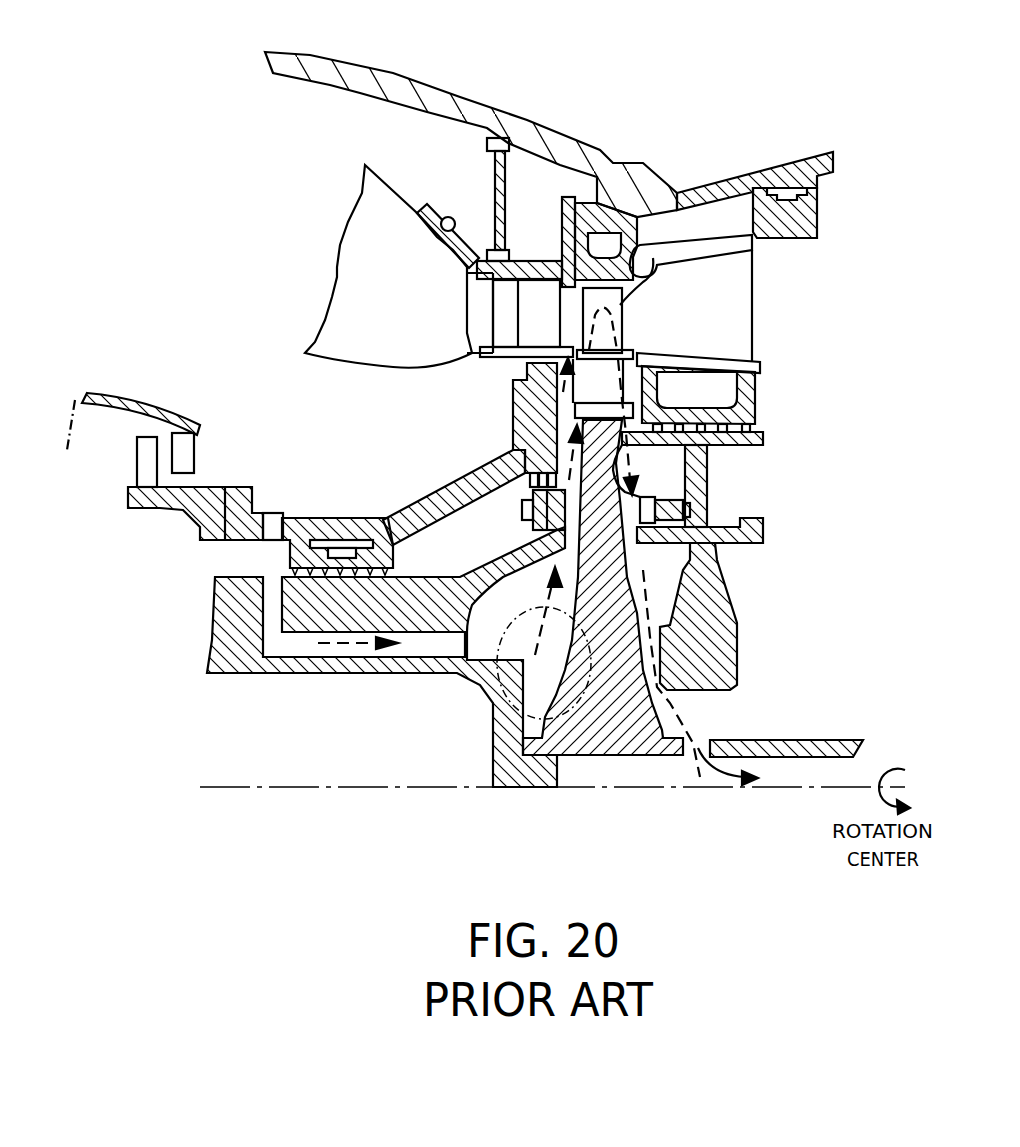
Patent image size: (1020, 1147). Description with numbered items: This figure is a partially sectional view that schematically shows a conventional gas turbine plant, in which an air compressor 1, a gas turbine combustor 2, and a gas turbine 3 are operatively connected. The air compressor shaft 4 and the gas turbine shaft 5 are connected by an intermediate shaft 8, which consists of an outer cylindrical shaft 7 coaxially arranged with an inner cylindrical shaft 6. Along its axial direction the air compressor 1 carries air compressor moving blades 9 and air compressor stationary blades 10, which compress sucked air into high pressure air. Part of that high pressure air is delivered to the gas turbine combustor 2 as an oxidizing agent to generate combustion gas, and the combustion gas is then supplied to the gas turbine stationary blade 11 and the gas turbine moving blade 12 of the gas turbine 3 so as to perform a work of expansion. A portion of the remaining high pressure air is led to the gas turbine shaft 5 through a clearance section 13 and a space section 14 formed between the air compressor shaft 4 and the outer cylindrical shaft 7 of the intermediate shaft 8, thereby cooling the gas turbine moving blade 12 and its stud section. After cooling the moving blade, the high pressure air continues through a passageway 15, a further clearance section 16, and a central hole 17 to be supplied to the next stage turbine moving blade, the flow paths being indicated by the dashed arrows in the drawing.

The air compressor 1 is at (118, 532).
The gas turbine combustor 2 is at (336, 216).
The gas turbine 3 is at (849, 221).
The air compressor shaft 4 is at (213, 657).
The gas turbine shaft 5 is at (640, 638).
The inner cylindrical shaft 6 is at (425, 577).
The outer cylindrical shaft 7 is at (337, 520).
The intermediate shaft 8 is at (308, 428).
The air compressor moving blade 9 is at (140, 437).
The air compressor stationary blade 10 is at (180, 443).
The gas turbine stationary blade 11 is at (538, 302).
The gas turbine moving blade 12 is at (683, 352).
The clearance section 13 is at (270, 513).
The space section 14 is at (300, 643).
The passageway 15 is at (667, 572).
The clearance section 16 is at (697, 757).
The central hole 17 is at (800, 772).